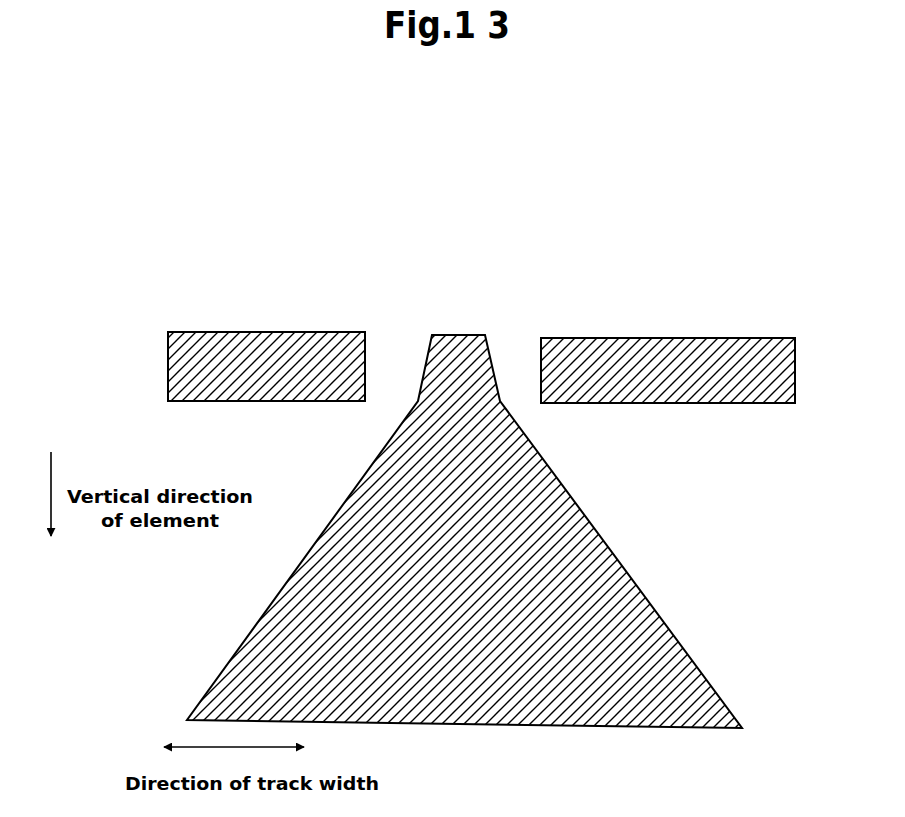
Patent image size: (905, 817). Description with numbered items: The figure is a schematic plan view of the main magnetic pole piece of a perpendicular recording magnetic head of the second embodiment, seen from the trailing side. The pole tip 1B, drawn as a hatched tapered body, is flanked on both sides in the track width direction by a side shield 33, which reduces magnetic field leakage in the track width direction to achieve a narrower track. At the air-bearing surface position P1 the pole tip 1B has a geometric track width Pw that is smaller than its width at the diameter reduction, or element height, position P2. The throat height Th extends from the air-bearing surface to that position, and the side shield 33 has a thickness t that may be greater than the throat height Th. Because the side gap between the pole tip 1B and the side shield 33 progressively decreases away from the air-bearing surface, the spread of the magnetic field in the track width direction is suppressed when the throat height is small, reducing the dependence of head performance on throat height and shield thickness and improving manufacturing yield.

The side shield 33 is at (236, 401).
The pole tip 1B is at (464, 531).
The geometric track width Pw is at (507, 317).
The throat height Th is at (480, 398).
The air-bearing surface position P1 is at (485, 333).
The element height position P2 is at (500, 401).
The side shield thickness t is at (780, 401).